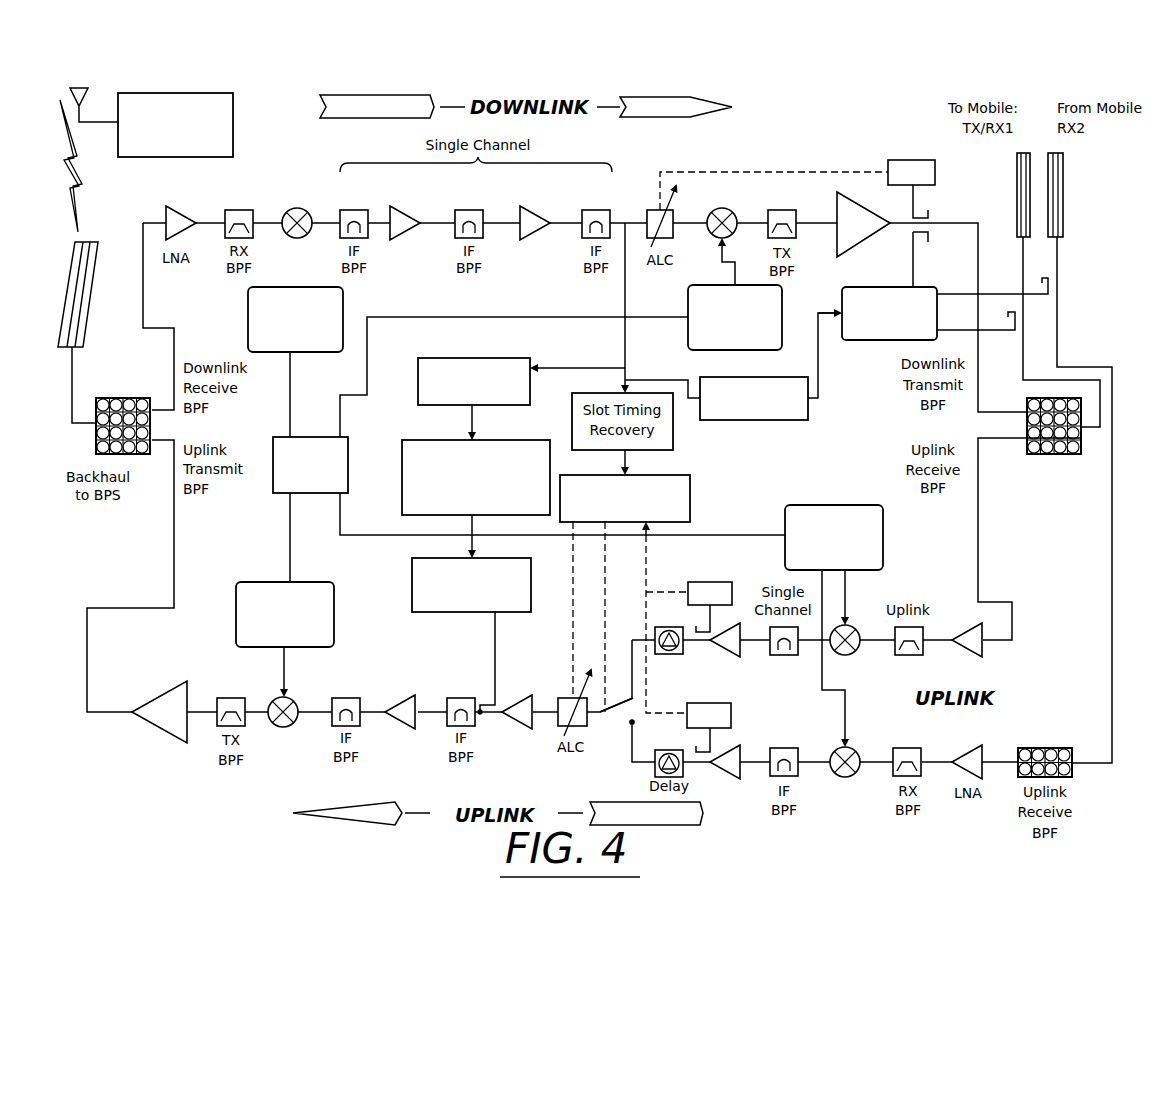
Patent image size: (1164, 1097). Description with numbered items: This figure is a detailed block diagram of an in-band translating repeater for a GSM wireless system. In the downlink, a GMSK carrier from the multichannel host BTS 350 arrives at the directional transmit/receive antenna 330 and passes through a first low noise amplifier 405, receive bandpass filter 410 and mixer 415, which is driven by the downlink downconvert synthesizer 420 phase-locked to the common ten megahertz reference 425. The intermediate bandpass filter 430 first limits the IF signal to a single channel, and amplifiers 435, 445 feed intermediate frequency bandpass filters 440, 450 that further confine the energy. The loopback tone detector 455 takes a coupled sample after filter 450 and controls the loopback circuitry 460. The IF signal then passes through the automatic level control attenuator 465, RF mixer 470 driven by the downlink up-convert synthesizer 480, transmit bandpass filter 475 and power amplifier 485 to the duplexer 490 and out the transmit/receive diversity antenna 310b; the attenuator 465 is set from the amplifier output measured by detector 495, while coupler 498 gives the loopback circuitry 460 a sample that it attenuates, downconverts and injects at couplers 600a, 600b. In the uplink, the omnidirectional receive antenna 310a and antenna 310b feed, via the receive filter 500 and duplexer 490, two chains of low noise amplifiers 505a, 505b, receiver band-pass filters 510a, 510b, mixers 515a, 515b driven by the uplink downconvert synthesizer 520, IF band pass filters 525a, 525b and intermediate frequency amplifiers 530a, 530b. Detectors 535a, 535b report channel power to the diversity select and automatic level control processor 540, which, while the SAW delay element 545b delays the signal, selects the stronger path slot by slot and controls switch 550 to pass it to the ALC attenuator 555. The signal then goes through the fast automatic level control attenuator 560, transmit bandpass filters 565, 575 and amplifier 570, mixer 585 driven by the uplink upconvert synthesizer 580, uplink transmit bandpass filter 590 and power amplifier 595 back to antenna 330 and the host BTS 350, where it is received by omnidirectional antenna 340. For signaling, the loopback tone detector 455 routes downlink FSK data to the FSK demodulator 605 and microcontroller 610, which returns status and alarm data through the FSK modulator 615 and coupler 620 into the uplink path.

The omnidirectional receive antenna 310a is at (1063, 190).
The transmit/receive diversity antenna 310b is at (1017, 190).
The directional transmit/receive antenna 330 is at (92, 306).
The omnidirectional antenna 340 is at (92, 102).
The multichannel host BTS 350 is at (205, 93).
The first low noise amplifier 405 is at (168, 212).
The receive bandpass filter 410 is at (232, 209).
The mixer 415 is at (296, 191).
The downlink downconvert synthesizer 420 is at (248, 322).
The 10 MHz reference 425 is at (273, 448).
The intermediate bandpass filter 430 is at (352, 209).
The amplifier 435 is at (400, 208).
The intermediate frequency bandpass filter 440 is at (462, 209).
The amplifier 445 is at (530, 208).
The intermediate frequency bandpass filter 450 is at (590, 209).
The loopback tone detector 455 is at (785, 420).
The loopback circuitry 460 is at (895, 287).
The automatic level control attenuator 465 is at (652, 209).
The RF mixer 470 is at (722, 207).
The transmit bandpass filter 475 is at (780, 209).
The downlink up-convert synthesizer 480 is at (688, 304).
The power amplifier 485 is at (840, 206).
The duplexer 490 is at (1043, 454).
The detector 495 is at (890, 162).
The coupler 498 is at (929, 243).
The receive filter 500 is at (1045, 748).
The low noise amplifier 505a is at (968, 746).
The low noise amplifier 505b is at (980, 658).
The receiver band-pass filter 510a is at (905, 748).
The receiver band-pass filter 510b is at (909, 656).
The mixer 515a is at (853, 750).
The mixer 515b is at (845, 656).
The uplink downconvert synthesizer 520 is at (848, 505).
The IF band pass filter 525a is at (785, 748).
The IF band pass filter 525b is at (797, 656).
The intermediate frequency amplifier 530a is at (728, 748).
The intermediate frequency amplifier 530b is at (732, 658).
The detector 535a is at (733, 716).
The detector 535b is at (716, 582).
The diversity select and automatic level control processor 540 is at (690, 487).
The SAW delay element 545b is at (668, 626).
The switch 550 is at (600, 716).
The ALC attenuator 555 is at (562, 727).
The fast automatic level control attenuator 560 is at (514, 695).
The transmit bandpass filter 565 is at (466, 697).
The amplifier 570 is at (405, 695).
The transmit bandpass filter 575 is at (341, 697).
The uplink upconvert synthesizer 580 is at (252, 582).
The mixer 585 is at (271, 699).
The uplink transmit bandpass filter 590 is at (218, 697).
The power amplifier 595 is at (160, 688).
The coupler 600a is at (1052, 282).
The coupler 600b is at (1018, 322).
The FSK demodulator 605 is at (442, 358).
The microcontroller 610 is at (404, 448).
The FSK modulator 615 is at (413, 585).
The coupler 620 is at (487, 716).